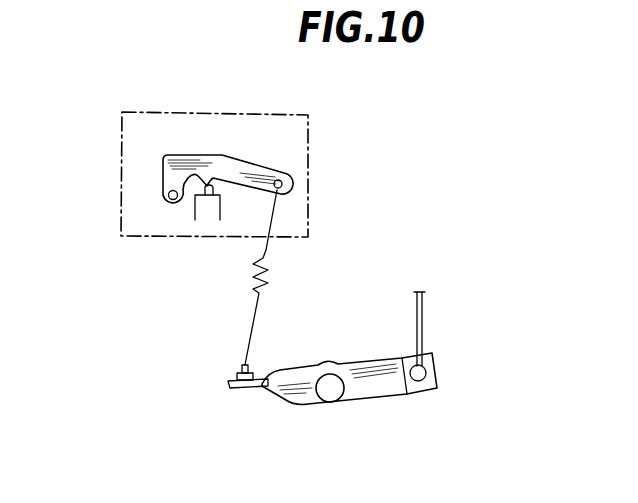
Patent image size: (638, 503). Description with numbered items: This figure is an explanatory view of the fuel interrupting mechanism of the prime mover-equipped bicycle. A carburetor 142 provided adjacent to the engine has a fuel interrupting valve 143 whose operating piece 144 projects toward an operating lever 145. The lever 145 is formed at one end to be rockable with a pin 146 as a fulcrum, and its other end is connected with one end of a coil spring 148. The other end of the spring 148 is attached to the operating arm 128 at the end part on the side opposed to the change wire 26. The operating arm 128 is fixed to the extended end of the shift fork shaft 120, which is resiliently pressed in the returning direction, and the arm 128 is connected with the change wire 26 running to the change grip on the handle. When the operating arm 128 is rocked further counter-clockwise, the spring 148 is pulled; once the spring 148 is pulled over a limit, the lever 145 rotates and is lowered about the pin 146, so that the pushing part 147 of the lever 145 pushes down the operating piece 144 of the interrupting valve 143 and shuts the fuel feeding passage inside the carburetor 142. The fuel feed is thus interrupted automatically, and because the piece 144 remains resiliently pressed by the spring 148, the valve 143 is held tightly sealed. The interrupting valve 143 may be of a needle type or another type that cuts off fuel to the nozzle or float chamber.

The carburetor 142 is at (311, 136).
The operating lever 145 is at (210, 160).
The pushing part 147 is at (208, 184).
The pin 146 is at (168, 195).
The operating piece 144 is at (229, 192).
The fuel interrupting valve 143 is at (205, 202).
The coil spring 148 is at (257, 320).
The operating arm 128 is at (378, 390).
The shift fork shaft 120 is at (330, 388).
The change wire 26 is at (423, 318).